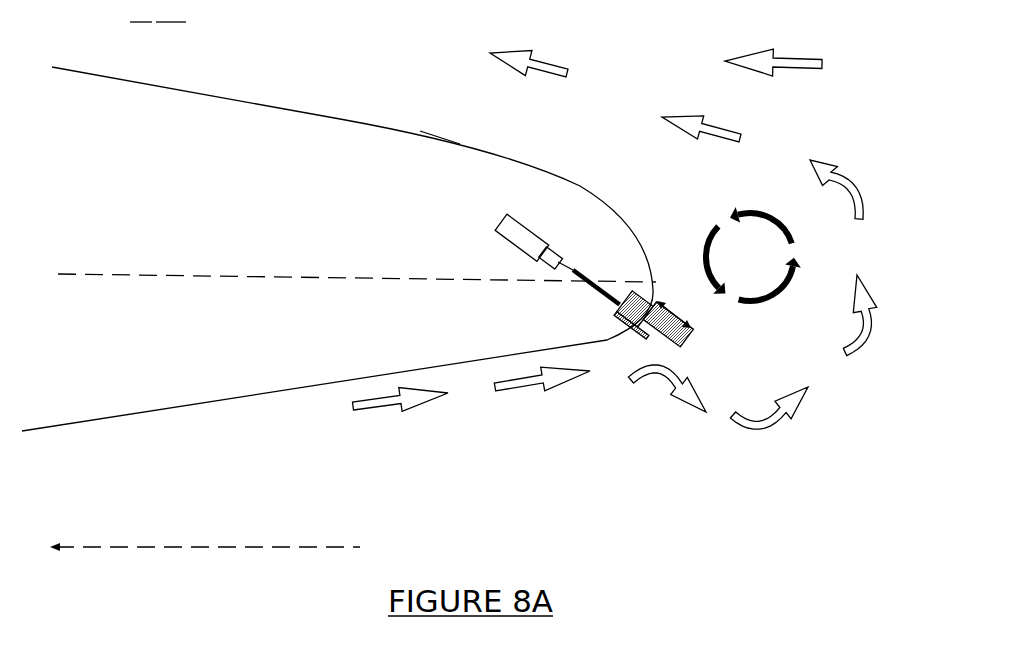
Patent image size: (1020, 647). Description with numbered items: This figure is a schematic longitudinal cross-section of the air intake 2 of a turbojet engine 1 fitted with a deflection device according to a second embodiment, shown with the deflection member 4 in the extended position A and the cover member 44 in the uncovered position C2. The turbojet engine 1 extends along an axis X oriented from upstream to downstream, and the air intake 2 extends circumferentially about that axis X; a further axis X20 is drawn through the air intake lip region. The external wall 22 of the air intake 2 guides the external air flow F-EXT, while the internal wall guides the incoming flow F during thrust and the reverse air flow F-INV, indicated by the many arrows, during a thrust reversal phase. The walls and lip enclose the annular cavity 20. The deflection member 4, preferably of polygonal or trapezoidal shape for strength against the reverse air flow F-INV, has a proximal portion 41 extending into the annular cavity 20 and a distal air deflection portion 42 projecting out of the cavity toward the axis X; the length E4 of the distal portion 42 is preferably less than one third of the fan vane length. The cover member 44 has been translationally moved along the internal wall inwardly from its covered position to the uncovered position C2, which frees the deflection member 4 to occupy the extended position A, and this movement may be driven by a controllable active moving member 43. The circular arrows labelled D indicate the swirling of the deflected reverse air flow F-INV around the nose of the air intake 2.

The turbojet engine 1 is at (337, 249).
The air intake 2 is at (409, 126).
The deflection member 4 is at (651, 317).
The annular cavity 20 is at (337, 249).
The external wall 22 is at (440, 140).
The proximal portion 41 is at (618, 315).
The distal air deflection portion 42 is at (633, 336).
The controllable active moving member 43 is at (526, 229).
The cover member 44 is at (610, 336).
The axis of the lip X20 is at (341, 275).
The axis X is at (198, 549).
The rotation direction D is at (795, 246).
The length of the distal portion E4 is at (677, 311).
The air flow F is at (773, 52).
The external air flow F-EXT is at (531, 52).
The reverse air flow F-INV is at (618, 286).
The extended position A is at (141, 13).
The uncovered position C2 is at (171, 13).